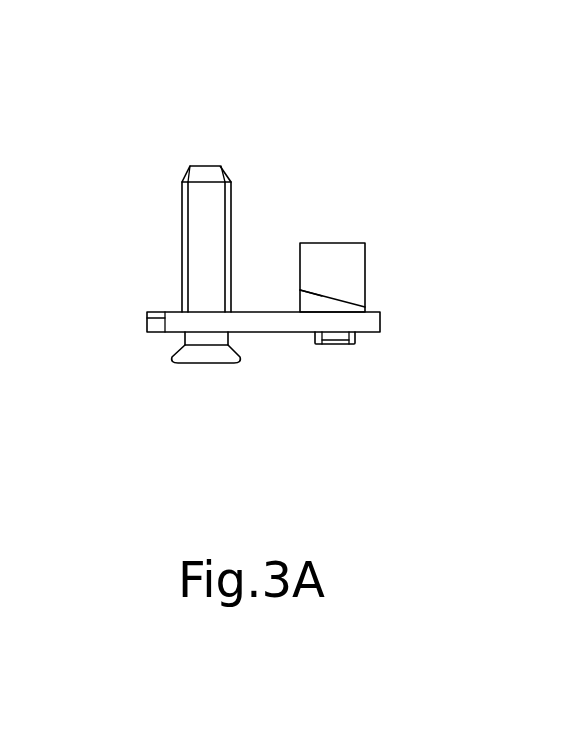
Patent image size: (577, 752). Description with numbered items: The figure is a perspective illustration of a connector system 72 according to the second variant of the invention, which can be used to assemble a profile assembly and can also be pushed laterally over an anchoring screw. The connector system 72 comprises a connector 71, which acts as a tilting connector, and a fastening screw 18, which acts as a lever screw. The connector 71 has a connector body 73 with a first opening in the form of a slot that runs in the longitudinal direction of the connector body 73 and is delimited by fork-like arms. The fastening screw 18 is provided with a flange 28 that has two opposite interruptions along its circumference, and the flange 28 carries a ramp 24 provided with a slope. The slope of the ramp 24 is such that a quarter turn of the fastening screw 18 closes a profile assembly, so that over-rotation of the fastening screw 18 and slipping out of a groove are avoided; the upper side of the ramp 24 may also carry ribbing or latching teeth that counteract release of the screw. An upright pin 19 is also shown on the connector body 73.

The connector system 72 is at (353, 108).
The fastening screw 18 is at (355, 252).
The flange 28 is at (322, 304).
The pin 19 is at (193, 235).
The ramp 24 is at (338, 302).
The connector 71 is at (405, 316).
The connector body 73 is at (277, 320).